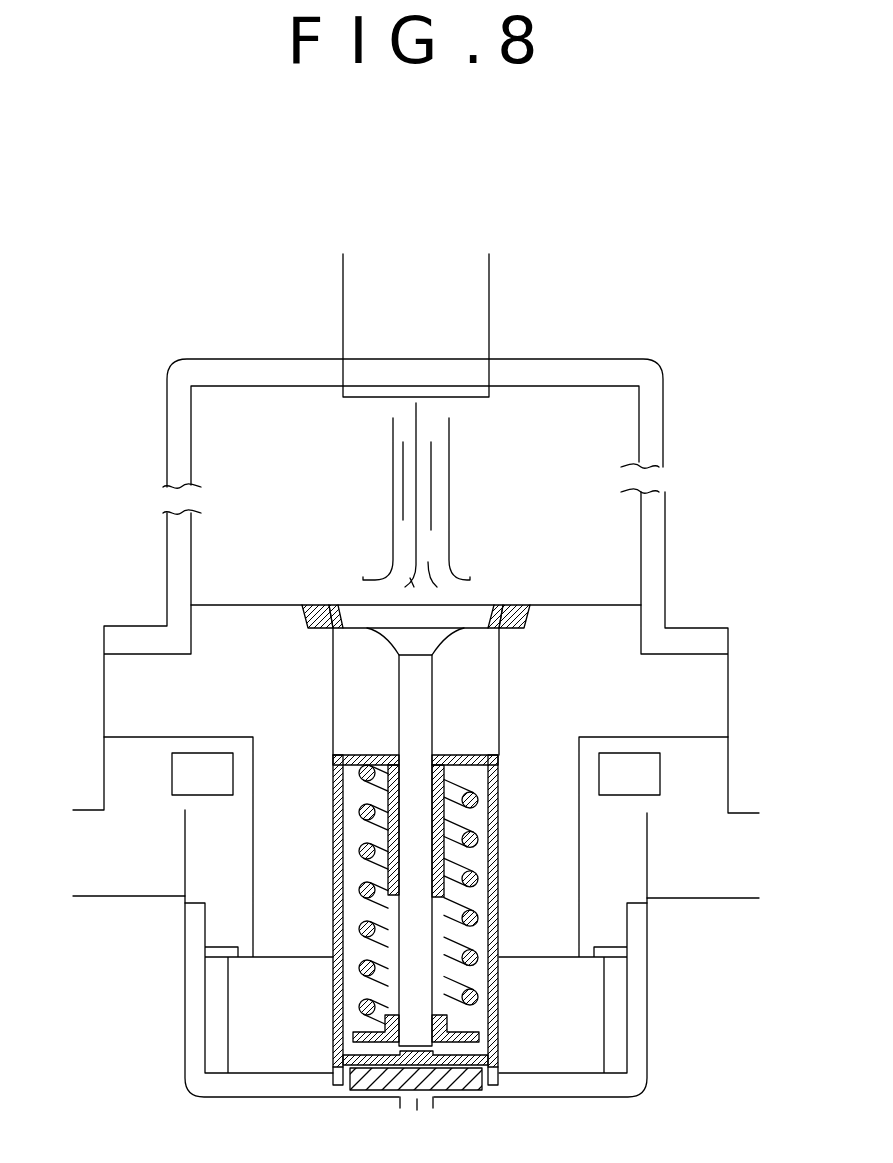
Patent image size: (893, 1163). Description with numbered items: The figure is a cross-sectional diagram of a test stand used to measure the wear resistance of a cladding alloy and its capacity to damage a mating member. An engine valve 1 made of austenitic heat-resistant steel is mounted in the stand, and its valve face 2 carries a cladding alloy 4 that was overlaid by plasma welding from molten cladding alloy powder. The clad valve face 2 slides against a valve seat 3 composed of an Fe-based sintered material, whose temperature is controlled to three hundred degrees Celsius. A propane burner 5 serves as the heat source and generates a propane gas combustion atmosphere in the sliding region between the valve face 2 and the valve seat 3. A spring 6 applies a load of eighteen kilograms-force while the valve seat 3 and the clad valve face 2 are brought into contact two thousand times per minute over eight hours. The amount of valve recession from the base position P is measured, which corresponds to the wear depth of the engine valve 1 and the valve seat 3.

The engine valve 1 is at (433, 707).
The valve face 2 is at (330, 605).
The valve seat 3 is at (313, 605).
The cladding alloy 4 is at (330, 636).
The propane burner 5 is at (450, 335).
The spring 6 is at (470, 818).
The base position P is at (502, 606).